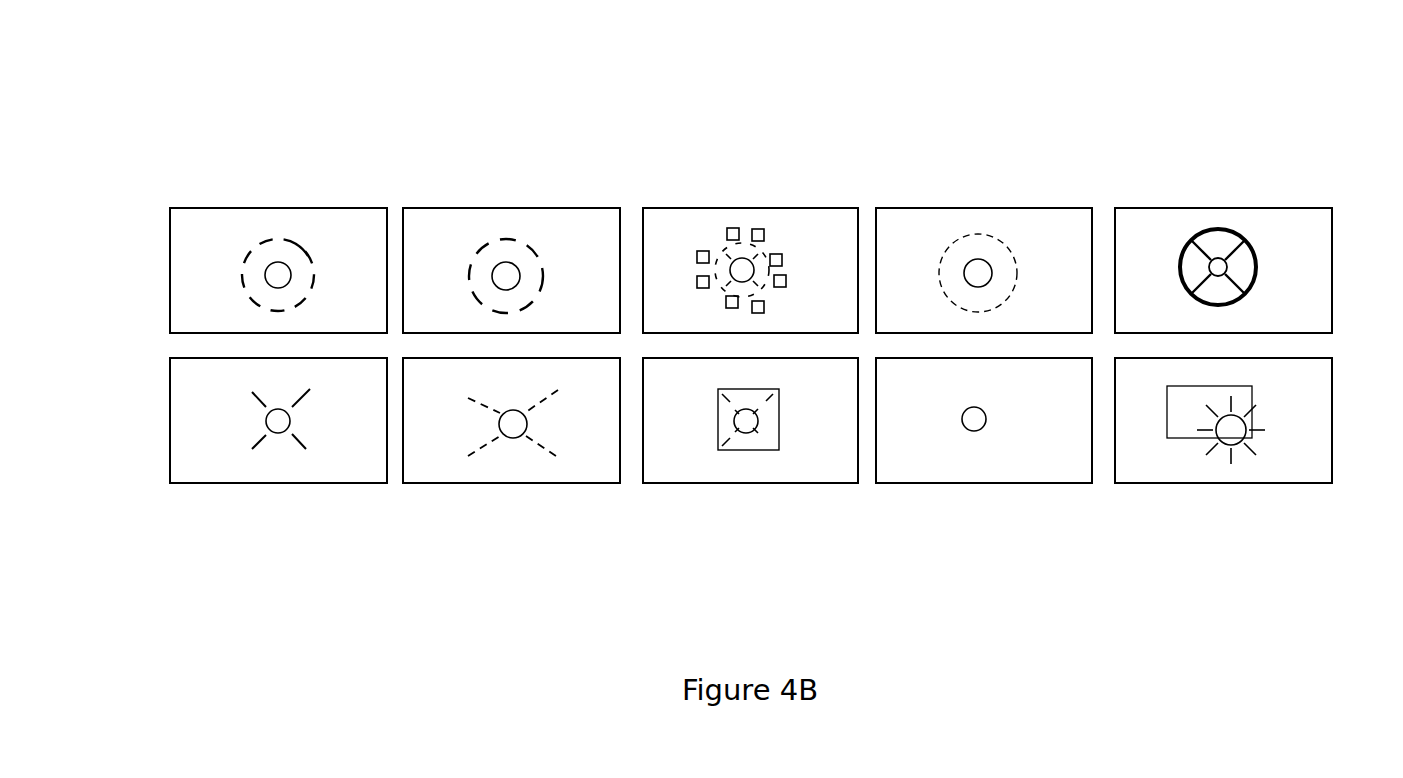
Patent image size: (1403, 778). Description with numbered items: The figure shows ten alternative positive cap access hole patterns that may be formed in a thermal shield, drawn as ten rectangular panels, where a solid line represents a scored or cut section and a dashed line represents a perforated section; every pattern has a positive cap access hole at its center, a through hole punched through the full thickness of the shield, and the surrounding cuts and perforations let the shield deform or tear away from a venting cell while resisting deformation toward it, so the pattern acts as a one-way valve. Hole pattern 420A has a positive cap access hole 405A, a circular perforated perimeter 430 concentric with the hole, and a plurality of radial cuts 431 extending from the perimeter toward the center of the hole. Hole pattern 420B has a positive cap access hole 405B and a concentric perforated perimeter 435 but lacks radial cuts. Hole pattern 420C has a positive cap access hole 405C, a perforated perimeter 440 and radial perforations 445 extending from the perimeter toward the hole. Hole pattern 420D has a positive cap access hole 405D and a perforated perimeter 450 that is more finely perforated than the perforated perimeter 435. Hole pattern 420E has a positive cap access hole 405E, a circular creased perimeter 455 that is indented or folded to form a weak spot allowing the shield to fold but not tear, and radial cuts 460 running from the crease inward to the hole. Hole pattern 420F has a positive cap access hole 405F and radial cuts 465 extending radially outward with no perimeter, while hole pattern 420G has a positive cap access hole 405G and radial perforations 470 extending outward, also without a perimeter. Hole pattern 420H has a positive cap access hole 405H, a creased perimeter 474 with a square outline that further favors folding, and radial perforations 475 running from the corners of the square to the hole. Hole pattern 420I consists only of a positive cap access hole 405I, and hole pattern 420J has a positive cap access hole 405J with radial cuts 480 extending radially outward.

The positive cap access hole 405A is at (272, 262).
The positive cap access hole 405B is at (493, 262).
The positive cap access hole 405C is at (737, 258).
The positive cap access hole 405D is at (965, 263).
The positive cap access hole 405E is at (1213, 257).
The positive cap access hole 405F is at (278, 430).
The positive cap access hole 405G is at (513, 438).
The positive cap access hole 405H is at (746, 432).
The positive cap access hole 405I is at (974, 431).
The positive cap access hole 405J is at (1225, 442).
The hole pattern 420A is at (278, 273).
The hole pattern 420B is at (511, 273).
The hole pattern 420C is at (750, 273).
The hole pattern 420D is at (984, 273).
The hole pattern 420E is at (1223, 272).
The hole pattern 420F is at (278, 420).
The hole pattern 420G is at (511, 420).
The hole pattern 420H is at (750, 420).
The hole pattern 420I is at (984, 420).
The hole pattern 420J is at (1223, 420).
The perforated perimeter 430 is at (272, 238).
The radial cuts 431 is at (294, 256).
The perforated perimeter 435 is at (513, 242).
The perforated perimeter 440 is at (750, 237).
The radial perforations 445 is at (718, 253).
The perforated perimeter 450 is at (993, 240).
The creased perimeter 455 is at (1233, 235).
The radial cuts 460 is at (1232, 253).
The radial cuts 465 is at (302, 447).
The radial perforations 470 is at (543, 447).
The creased perimeter 474 is at (780, 417).
The radial perforations 475 is at (765, 437).
The radial cuts 480 is at (1252, 453).